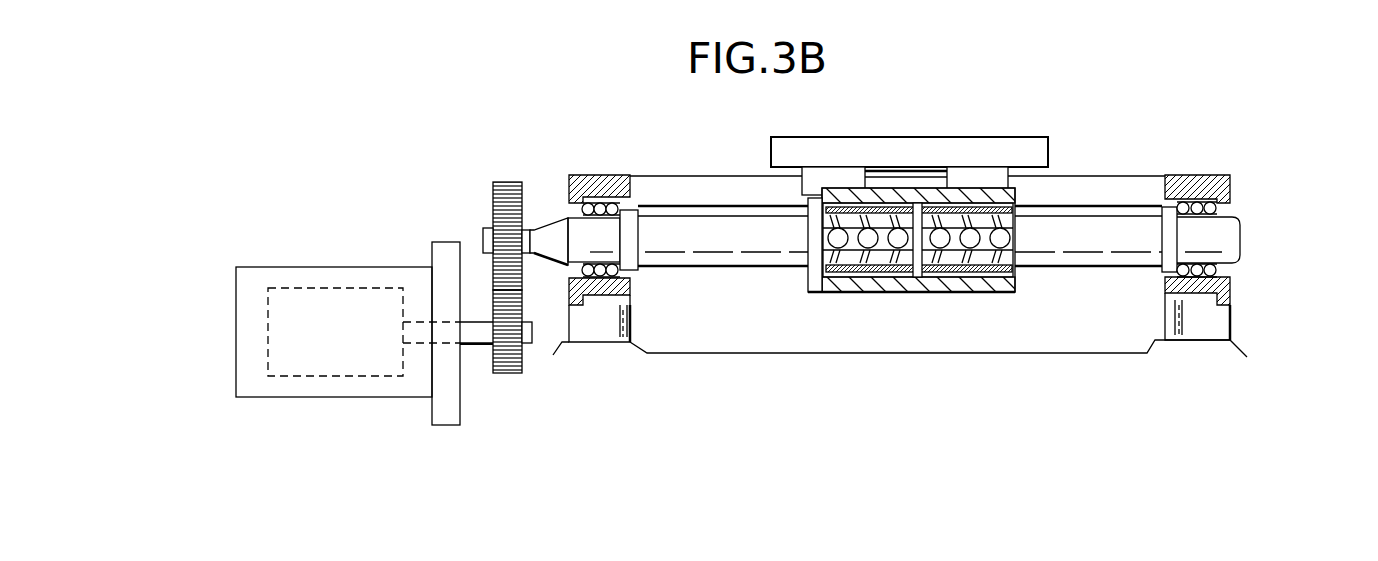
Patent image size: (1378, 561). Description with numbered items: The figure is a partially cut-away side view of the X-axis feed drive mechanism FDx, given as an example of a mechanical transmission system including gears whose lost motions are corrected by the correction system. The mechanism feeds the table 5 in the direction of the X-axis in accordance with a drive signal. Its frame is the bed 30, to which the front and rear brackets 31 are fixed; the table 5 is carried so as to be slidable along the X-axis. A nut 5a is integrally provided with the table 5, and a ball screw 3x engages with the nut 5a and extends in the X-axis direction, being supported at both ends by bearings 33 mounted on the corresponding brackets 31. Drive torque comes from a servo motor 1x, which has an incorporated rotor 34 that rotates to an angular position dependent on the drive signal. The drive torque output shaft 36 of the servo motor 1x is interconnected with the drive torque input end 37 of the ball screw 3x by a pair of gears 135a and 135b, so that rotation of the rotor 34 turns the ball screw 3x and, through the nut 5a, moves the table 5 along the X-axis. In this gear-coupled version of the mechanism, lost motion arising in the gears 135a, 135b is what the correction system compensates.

The servo motor 1x is at (332, 398).
The rotor 34 is at (267, 326).
The drive torque output shaft 36 is at (477, 346).
The gear 135a is at (493, 198).
The gear 135b is at (525, 367).
The drive torque input end 37 is at (527, 235).
The ball screw 3x is at (698, 223).
The bearings 33 is at (591, 196).
The brackets 31 is at (632, 305).
The bed 30 is at (987, 352).
The table 5 is at (908, 135).
The nut 5a is at (838, 292).
The X-axis feed drive mechanism FDx is at (1240, 209).